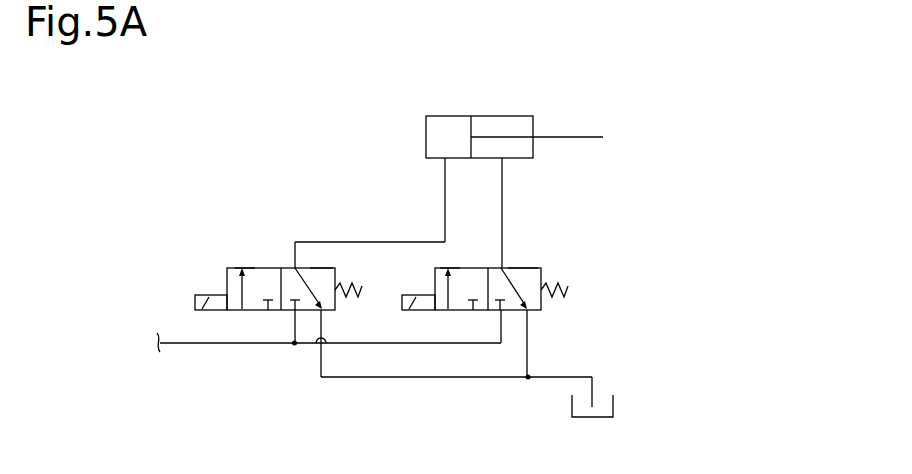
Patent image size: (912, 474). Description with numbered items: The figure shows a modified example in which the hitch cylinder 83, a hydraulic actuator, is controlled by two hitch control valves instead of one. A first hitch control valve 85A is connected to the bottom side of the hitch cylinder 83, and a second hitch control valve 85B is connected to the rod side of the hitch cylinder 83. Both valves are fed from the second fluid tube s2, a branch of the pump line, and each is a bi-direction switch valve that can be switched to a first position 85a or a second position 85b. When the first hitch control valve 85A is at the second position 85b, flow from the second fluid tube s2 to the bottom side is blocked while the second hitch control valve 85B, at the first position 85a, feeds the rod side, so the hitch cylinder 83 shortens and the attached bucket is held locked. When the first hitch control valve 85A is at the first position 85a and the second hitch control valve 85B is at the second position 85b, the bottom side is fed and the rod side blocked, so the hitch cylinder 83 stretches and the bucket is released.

The hitch cylinder 83 is at (497, 116).
The first hitch control valve 85A is at (225, 264).
The second hitch control valve 85B is at (547, 264).
The first position 85a is at (262, 262).
The second position 85b is at (326, 260).
The second fluid tube s2 is at (240, 346).